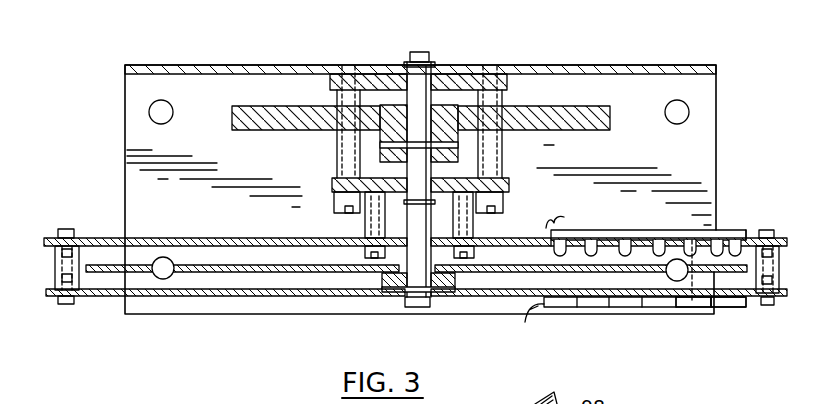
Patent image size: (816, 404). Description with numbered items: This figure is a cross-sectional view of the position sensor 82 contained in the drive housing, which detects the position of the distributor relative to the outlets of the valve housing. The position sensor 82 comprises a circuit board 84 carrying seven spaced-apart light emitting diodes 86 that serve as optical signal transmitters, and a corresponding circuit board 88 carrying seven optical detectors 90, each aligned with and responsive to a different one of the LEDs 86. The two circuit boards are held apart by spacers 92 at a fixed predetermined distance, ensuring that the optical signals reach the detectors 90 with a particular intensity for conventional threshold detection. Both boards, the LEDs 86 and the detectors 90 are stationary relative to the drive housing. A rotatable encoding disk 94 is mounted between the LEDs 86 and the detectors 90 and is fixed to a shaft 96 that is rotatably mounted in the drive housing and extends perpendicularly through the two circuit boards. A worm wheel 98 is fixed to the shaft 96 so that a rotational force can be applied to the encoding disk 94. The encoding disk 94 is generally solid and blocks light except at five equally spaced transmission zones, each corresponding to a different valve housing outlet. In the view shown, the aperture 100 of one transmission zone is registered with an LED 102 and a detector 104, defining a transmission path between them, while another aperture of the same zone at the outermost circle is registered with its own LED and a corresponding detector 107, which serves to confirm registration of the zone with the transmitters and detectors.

The position sensor 82 is at (214, 56).
The circuit board 84 is at (93, 237).
The light emitting diodes 86 is at (588, 224).
The circuit board 88 is at (100, 297).
The optical detectors 90 is at (603, 305).
The spacers 92 is at (58, 271).
The encoding disk 94 is at (296, 274).
The shaft 96 is at (419, 100).
The worm wheel 98 is at (302, 105).
The aperture 100 is at (692, 264).
The LED 102 is at (654, 246).
The detector 104 is at (699, 301).
The detector 107 is at (741, 301).